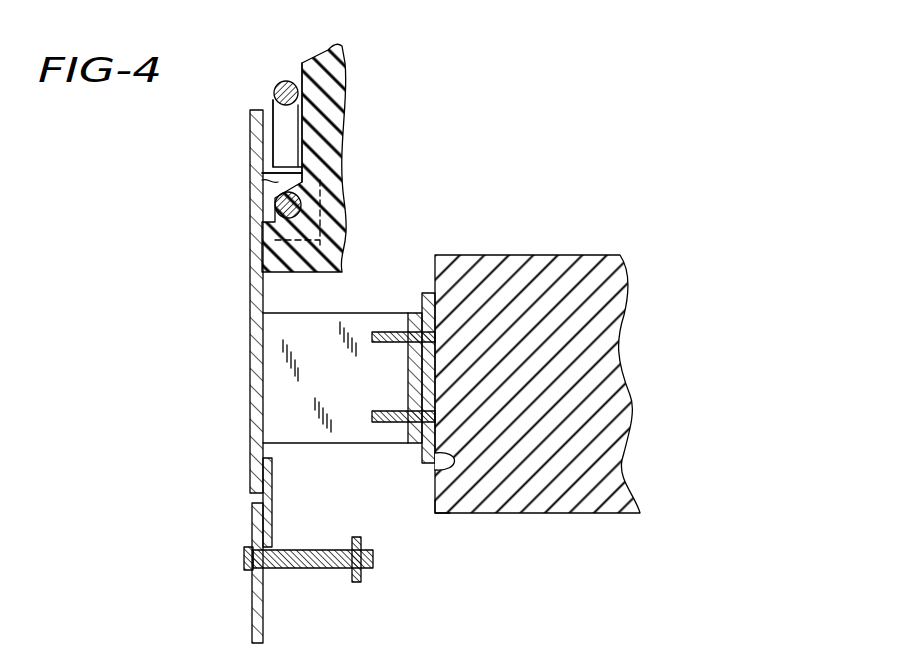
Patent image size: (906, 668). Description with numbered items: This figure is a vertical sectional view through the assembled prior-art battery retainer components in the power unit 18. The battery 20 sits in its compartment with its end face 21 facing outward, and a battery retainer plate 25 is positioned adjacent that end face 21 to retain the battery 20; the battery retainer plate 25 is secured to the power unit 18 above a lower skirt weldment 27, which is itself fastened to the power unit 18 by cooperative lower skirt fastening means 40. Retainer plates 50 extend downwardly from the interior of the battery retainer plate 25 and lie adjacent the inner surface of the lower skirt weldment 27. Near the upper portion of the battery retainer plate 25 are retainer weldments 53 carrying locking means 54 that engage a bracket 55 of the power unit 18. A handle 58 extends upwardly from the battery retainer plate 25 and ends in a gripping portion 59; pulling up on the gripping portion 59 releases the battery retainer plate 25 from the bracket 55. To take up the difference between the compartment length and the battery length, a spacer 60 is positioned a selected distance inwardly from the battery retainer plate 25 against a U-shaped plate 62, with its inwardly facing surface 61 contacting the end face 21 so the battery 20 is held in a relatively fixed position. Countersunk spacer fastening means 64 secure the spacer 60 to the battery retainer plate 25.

The power unit 18 is at (342, 105).
The battery 20 is at (537, 255).
The end face 21 is at (435, 514).
The battery retainer plate 25 is at (250, 306).
The lower skirt weldment 27 is at (251, 605).
The lower skirt fastening means 40 is at (305, 570).
The retainer plates 50 is at (273, 500).
The retainer weldments 53 is at (262, 173).
The locking means 54 is at (276, 214).
The bracket 55 is at (262, 182).
The handle 58 is at (273, 108).
The gripping portion 59 is at (278, 84).
The spacer 60 is at (421, 292).
The inwardly facing surface 61 is at (437, 466).
The U-shaped plate 62 is at (335, 328).
The countersunk spacer fastening means 64 is at (372, 340).